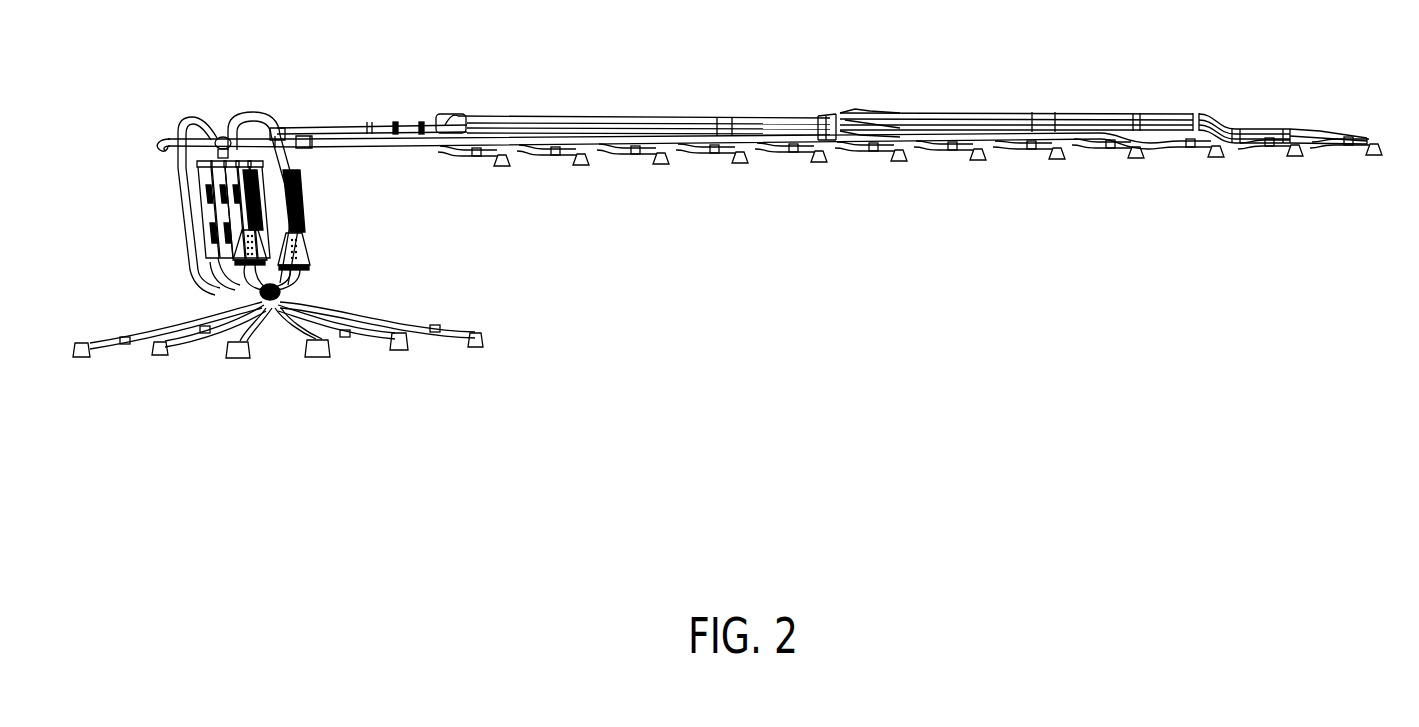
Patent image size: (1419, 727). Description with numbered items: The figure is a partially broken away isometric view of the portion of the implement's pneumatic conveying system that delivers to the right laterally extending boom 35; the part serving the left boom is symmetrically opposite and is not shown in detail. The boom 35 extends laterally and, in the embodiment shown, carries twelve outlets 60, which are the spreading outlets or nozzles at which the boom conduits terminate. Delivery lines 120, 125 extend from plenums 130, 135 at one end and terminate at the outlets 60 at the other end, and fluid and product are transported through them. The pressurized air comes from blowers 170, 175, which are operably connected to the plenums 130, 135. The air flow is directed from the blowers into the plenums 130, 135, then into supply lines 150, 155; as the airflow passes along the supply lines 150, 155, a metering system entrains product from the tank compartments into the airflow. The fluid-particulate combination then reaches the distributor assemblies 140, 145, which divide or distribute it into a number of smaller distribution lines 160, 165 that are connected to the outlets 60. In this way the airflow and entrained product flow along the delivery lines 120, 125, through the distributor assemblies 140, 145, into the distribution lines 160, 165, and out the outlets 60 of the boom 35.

The right laterally extending boom 35 is at (620, 110).
The outlets 60 is at (505, 166).
The delivery line 120 is at (333, 120).
The delivery line 125 is at (350, 153).
The plenum 130 is at (310, 262).
The plenum 135 is at (240, 247).
The distributor assembly 140 is at (398, 115).
The distributor assembly 145 is at (820, 110).
The supply line 150 is at (296, 134).
The supply line 155 is at (306, 143).
The distribution line 160 is at (458, 116).
The distribution line 165 is at (860, 112).
The blower 170 is at (307, 217).
The blower 175 is at (237, 213).